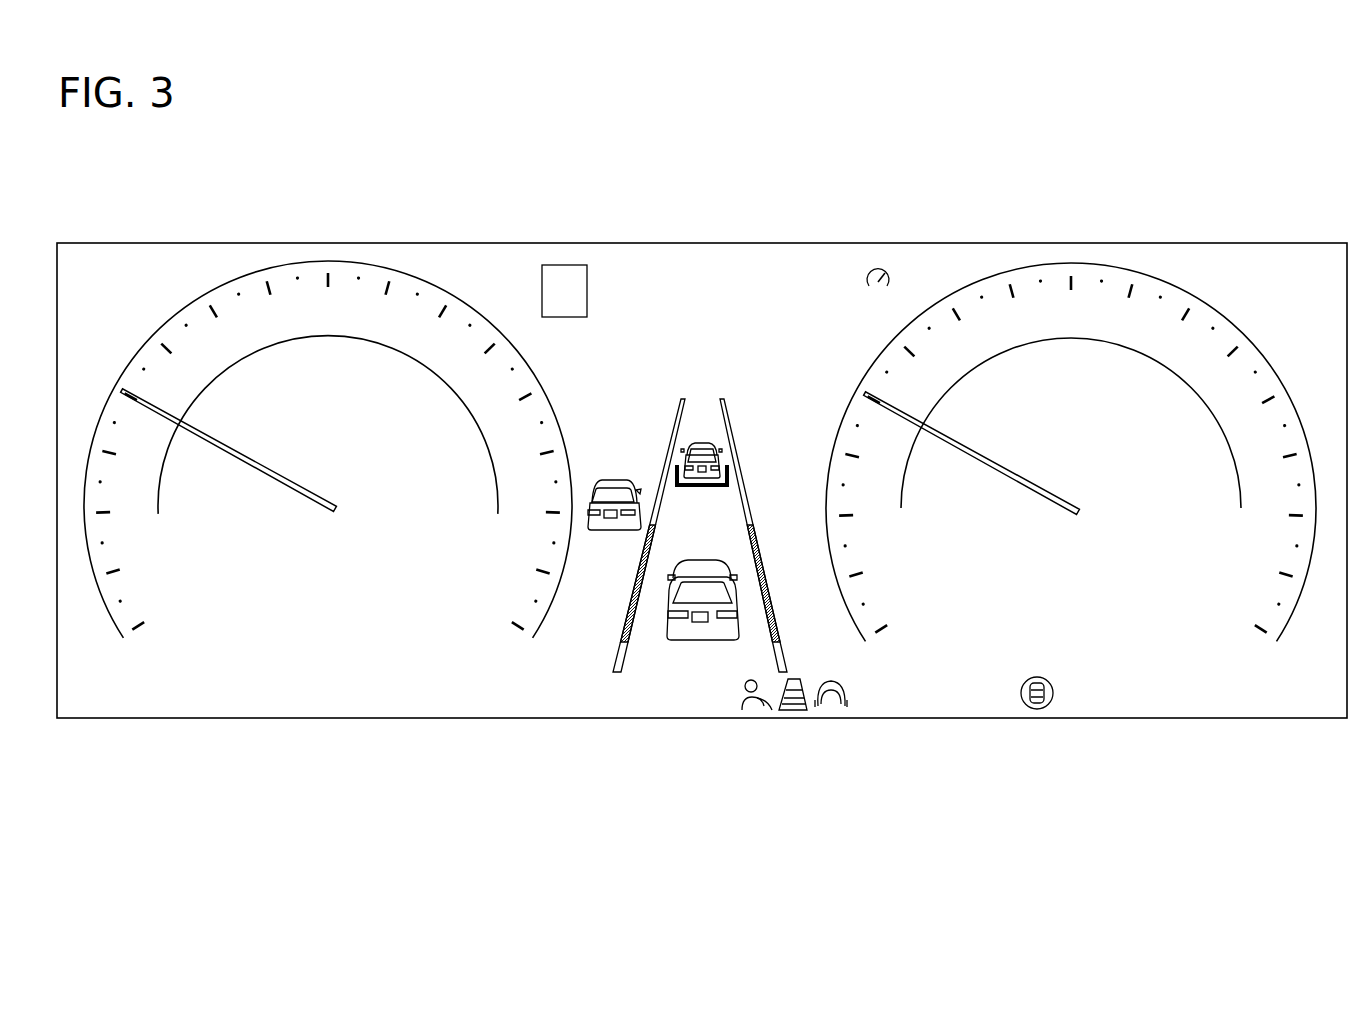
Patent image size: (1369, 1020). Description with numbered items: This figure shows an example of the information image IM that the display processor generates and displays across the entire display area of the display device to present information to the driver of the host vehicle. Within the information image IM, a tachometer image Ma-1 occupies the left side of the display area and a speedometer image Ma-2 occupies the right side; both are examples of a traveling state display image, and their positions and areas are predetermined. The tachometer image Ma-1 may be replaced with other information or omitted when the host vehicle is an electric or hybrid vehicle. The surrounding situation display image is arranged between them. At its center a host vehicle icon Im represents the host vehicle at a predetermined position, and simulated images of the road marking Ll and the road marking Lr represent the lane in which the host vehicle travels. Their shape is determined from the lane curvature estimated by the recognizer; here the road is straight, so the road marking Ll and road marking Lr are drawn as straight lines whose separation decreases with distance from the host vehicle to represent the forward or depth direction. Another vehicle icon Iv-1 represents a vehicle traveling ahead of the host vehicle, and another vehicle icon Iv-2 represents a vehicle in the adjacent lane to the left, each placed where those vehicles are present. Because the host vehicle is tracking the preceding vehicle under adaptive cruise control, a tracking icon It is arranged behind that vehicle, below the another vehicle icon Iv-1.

The information image IM is at (246, 200).
The tachometer image Ma-1 is at (297, 554).
The speedometer image Ma-2 is at (1030, 553).
The another vehicle icon Iv-1 is at (683, 460).
The another vehicle icon Iv-2 is at (615, 480).
The tracking icon It is at (727, 473).
The road marking Ll is at (612, 650).
The road marking Lr is at (787, 650).
The host vehicle icon Im is at (700, 640).